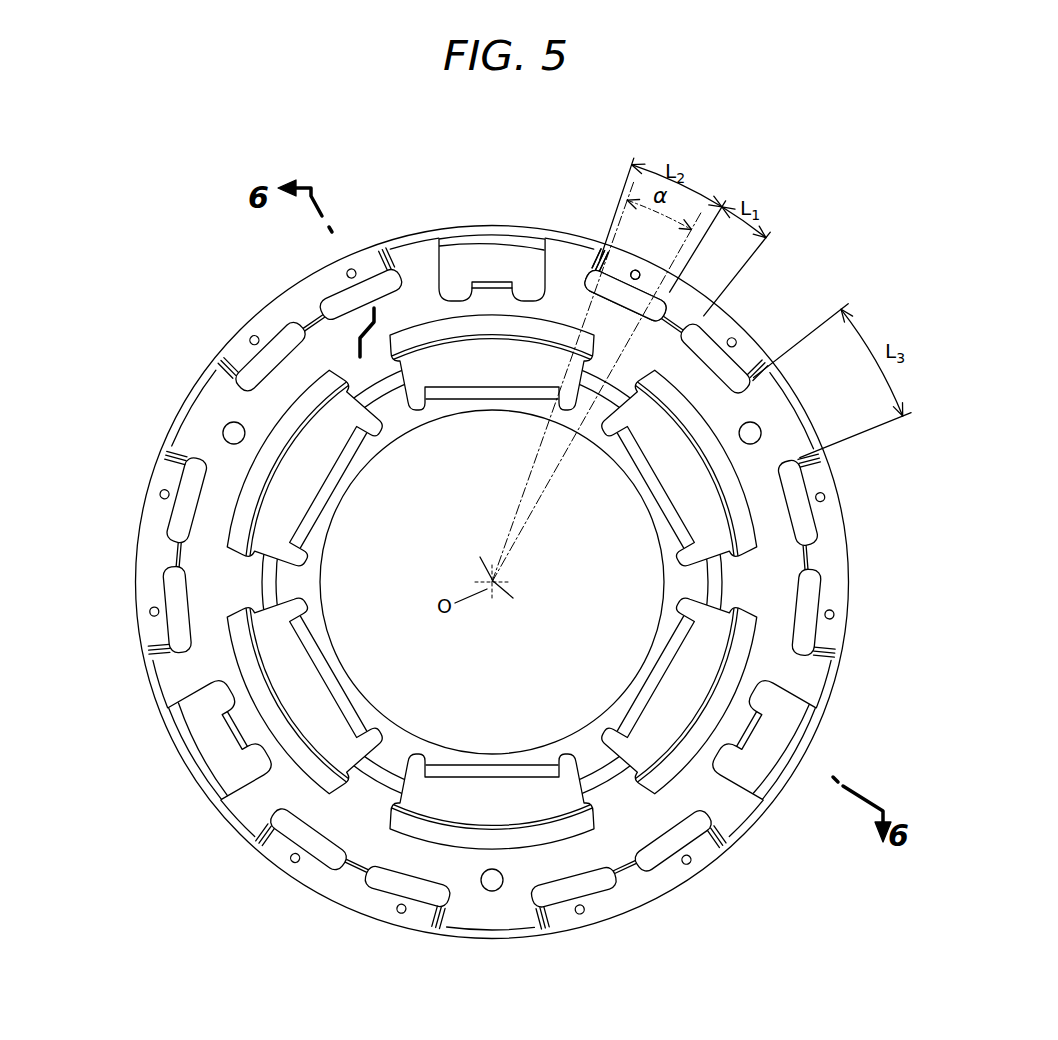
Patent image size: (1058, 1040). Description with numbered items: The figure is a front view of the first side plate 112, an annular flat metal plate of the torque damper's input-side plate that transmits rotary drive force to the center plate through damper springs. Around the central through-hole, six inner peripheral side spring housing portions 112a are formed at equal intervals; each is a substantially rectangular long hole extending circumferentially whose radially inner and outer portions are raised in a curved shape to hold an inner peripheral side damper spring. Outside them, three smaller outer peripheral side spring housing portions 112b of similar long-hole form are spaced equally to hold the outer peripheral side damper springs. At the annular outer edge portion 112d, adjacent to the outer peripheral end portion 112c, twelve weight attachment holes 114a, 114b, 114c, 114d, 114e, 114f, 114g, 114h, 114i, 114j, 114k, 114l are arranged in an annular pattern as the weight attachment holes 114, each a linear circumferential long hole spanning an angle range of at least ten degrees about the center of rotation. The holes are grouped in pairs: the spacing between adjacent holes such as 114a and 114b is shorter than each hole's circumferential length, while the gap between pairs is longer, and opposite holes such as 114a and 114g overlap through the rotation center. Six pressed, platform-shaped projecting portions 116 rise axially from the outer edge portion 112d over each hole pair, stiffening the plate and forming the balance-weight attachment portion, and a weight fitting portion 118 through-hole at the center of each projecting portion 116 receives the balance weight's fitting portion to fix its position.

The first side plate 112 is at (162, 343).
The inner peripheral side spring housing portion 112a is at (312, 682).
The outer peripheral side spring housing portion 112b is at (233, 762).
The outer peripheral end portion 112c is at (757, 823).
The outer edge portion 112d is at (790, 412).
The weight attachment hole 114 is at (501, 573).
The weight attachment hole 114a is at (584, 268).
The weight attachment hole 114b is at (757, 352).
The weight attachment hole 114c is at (800, 478).
The weight attachment hole 114d is at (800, 625).
The weight attachment hole 114e is at (662, 855).
The weight attachment hole 114f is at (554, 890).
The weight attachment hole 114g is at (434, 897).
The weight attachment hole 114h is at (313, 855).
The weight attachment hole 114i is at (172, 640).
The weight attachment hole 114j is at (183, 468).
The weight attachment hole 114k is at (265, 352).
The weight attachment hole 114l is at (395, 262).
The projecting portion 116 is at (838, 550).
The weight fitting portion 118 is at (733, 334).